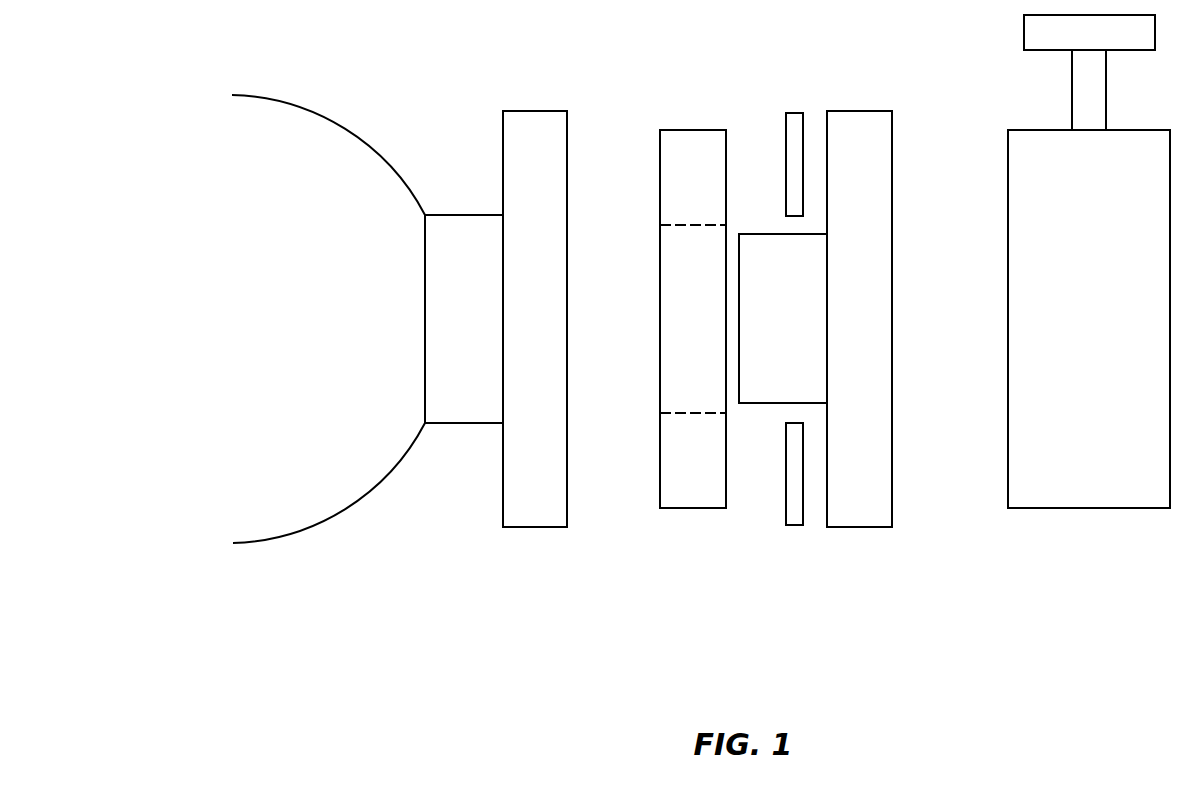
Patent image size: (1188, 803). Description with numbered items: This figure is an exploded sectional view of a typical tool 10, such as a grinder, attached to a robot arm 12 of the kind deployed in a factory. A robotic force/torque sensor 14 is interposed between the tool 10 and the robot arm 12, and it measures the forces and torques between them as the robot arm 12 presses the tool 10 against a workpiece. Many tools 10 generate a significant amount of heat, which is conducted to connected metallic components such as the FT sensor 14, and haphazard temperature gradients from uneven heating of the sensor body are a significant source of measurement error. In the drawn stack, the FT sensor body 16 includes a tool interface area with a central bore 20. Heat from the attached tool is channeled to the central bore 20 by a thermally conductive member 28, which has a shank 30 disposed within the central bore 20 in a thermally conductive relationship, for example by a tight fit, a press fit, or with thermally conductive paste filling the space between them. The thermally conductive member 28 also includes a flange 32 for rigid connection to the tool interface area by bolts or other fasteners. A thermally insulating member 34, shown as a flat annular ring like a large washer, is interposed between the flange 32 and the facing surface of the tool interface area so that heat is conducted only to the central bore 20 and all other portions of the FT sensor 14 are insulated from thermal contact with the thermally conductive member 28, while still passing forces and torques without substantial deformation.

The tool 10 is at (1068, 319).
The robot arm 12 is at (323, 319).
The robotic force/torque sensor 14 is at (895, 577).
The FT sensor body 16 is at (606, 540).
The central bore 20 is at (634, 330).
The thermally conductive member 28 is at (826, 287).
The shank 30 is at (770, 319).
The flange 32 is at (853, 505).
The thermally insulating member 34 is at (795, 525).